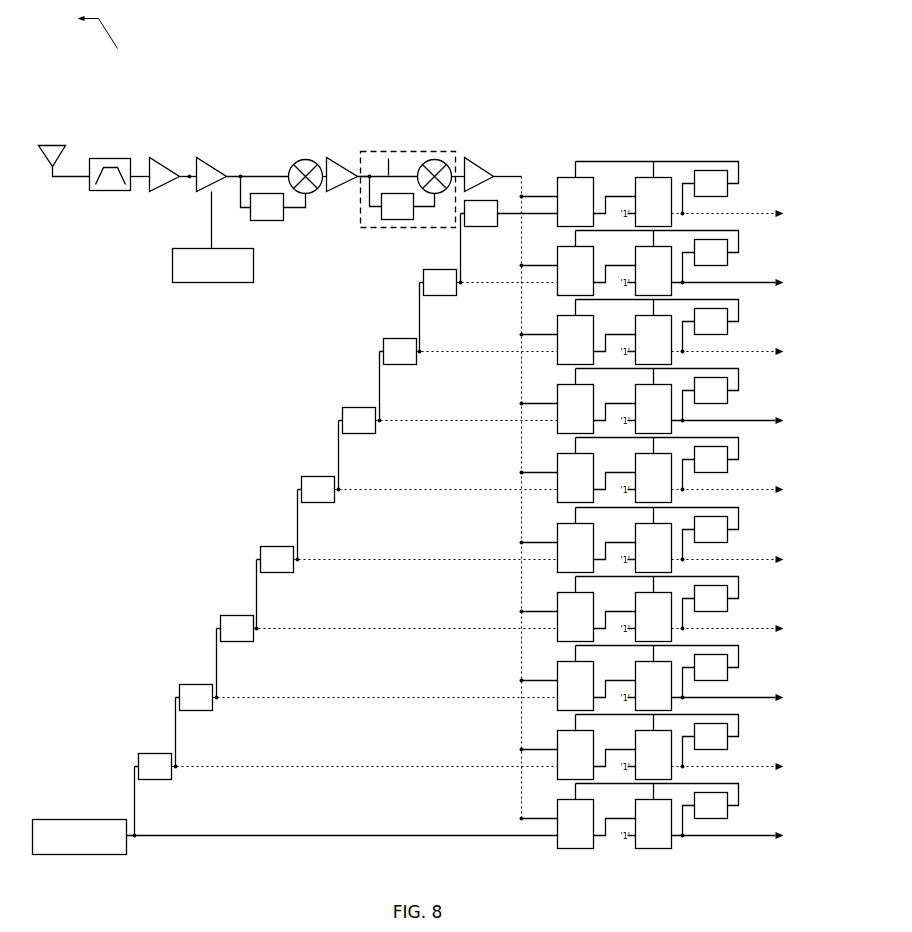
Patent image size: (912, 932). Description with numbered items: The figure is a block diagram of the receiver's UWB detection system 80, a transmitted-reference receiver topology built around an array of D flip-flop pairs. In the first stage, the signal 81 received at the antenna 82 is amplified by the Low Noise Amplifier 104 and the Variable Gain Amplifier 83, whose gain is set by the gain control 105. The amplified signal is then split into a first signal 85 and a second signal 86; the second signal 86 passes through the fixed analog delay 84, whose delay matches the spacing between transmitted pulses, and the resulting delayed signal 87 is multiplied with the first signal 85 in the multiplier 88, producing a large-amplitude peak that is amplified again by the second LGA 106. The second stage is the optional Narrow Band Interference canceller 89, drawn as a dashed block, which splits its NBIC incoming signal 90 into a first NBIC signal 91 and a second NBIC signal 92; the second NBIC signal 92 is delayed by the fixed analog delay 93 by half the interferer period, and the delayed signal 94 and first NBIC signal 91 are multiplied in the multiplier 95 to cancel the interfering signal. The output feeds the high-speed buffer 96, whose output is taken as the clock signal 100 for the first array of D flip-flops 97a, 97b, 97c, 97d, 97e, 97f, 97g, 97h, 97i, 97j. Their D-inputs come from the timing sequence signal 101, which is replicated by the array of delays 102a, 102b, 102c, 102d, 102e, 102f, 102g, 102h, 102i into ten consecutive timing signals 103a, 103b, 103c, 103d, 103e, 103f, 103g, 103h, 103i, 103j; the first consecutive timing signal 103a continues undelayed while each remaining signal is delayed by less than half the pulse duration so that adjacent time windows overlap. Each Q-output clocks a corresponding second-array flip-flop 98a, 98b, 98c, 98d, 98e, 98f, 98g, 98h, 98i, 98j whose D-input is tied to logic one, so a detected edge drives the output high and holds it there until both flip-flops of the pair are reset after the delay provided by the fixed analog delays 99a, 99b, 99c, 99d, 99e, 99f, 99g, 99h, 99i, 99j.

The receiver's UWB detection system 80 is at (80, 30).
The signal 81 is at (63, 145).
The antenna 82 is at (125, 158).
The Low Noise Amplifier 104 is at (172, 165).
The Variable Gain Amplifier 83 is at (224, 165).
The first signal 85 is at (255, 175).
The gain control 105 is at (190, 282).
The second signal 86 is at (243, 208).
The fixed analog delay 84 is at (268, 221).
The delayed signal 87 is at (305, 210).
The multiplier 88 is at (297, 162).
The second LGA 106 is at (341, 162).
The Narrow Band Interference canceller 89 is at (421, 151).
The NBIC incoming signal 90 is at (362, 198).
The first NBIC signal 91 is at (388, 158).
The second NBIC signal 92 is at (374, 228).
The fixed analog delay 93 is at (396, 220).
The delayed signal 94 is at (434, 220).
The multiplier 95 is at (446, 163).
The high-speed buffer 96 is at (489, 168).
The clock signal 100 is at (516, 176).
The timing sequence signal 101 is at (72, 819).
The delay 102a is at (156, 780).
The delay 102b is at (197, 711).
The delay 102c is at (238, 642).
The delay 102d is at (278, 573).
The delay 102e is at (319, 503).
The delay 102f is at (360, 434).
The delay 102g is at (401, 365).
The delay 102h is at (441, 296).
The delay 102i is at (483, 226).
The first consecutive timing signal 103a is at (490, 836).
The consecutive timing signal 103b is at (490, 767).
The consecutive timing signal 103c is at (490, 698).
The consecutive timing signal 103d is at (490, 629).
The consecutive timing signal 103e is at (490, 560).
The consecutive timing signal 103f is at (490, 490).
The consecutive timing signal 103g is at (490, 421).
The consecutive timing signal 103h is at (490, 352).
The consecutive timing signal 103i is at (490, 283).
The consecutive timing signal 103j is at (500, 214).
The D Flip-Flop 97a is at (559, 177).
The D Flip-Flop 97b is at (557, 256).
The D Flip-Flop 97c is at (557, 325).
The D Flip-Flop 97d is at (557, 394).
The D Flip-Flop 97e is at (557, 463).
The D Flip-Flop 97f is at (557, 533).
The D Flip-Flop 97g is at (557, 602).
The D Flip-Flop 97h is at (557, 671).
The D Flip-Flop 97i is at (557, 740).
The D Flip-Flop 97j is at (557, 809).
The D Flip-Flop 98a is at (636, 177).
The D Flip-Flop 98b is at (635, 259).
The D Flip-Flop 98c is at (635, 328).
The D Flip-Flop 98d is at (635, 397).
The D Flip-Flop 98e is at (635, 466).
The D Flip-Flop 98f is at (635, 536).
The D Flip-Flop 98g is at (635, 605).
The D Flip-Flop 98h is at (635, 674).
The D Flip-Flop 98i is at (635, 743).
The D Flip-Flop 98j is at (635, 812).
The fixed analog delay 99a is at (729, 194).
The fixed analog delay 99b is at (729, 263).
The fixed analog delay 99c is at (729, 332).
The fixed analog delay 99d is at (729, 401).
The fixed analog delay 99e is at (729, 470).
The fixed analog delay 99f is at (729, 540).
The fixed analog delay 99g is at (729, 609).
The fixed analog delay 99h is at (729, 678).
The fixed analog delay 99i is at (729, 747).
The fixed analog delay 99j is at (729, 816).